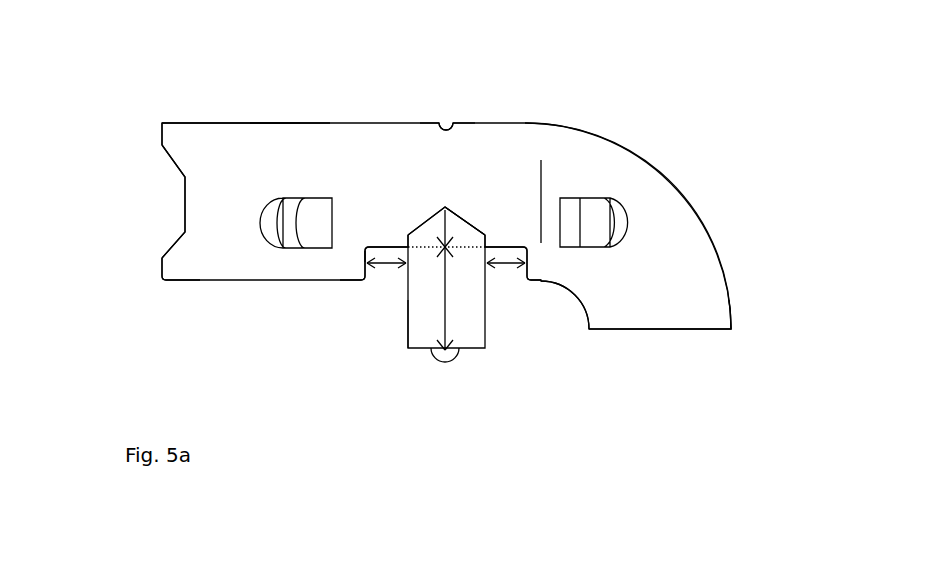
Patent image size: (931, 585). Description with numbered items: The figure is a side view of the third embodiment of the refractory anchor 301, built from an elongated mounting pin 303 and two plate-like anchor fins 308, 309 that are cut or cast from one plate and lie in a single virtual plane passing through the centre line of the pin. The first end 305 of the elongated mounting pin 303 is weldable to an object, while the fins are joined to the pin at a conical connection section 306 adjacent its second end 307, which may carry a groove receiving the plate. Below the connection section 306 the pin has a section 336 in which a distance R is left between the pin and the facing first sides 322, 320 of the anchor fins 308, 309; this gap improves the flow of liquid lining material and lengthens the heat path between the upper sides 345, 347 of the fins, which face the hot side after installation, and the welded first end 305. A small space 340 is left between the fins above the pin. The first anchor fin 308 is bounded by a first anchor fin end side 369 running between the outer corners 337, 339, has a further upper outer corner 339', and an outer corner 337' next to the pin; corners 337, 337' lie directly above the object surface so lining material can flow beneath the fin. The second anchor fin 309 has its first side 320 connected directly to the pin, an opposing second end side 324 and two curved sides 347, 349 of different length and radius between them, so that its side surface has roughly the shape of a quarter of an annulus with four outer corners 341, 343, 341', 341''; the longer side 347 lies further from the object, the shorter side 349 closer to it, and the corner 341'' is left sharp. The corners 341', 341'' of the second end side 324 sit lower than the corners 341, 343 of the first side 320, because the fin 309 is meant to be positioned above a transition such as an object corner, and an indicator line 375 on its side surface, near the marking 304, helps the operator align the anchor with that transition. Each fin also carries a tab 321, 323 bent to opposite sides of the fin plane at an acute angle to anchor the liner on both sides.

The refractory anchor 301 is at (145, 89).
The first anchor fin 308 is at (283, 150).
The outer corner 339 is at (142, 115).
The upper side 345 is at (240, 123).
The first anchor fin end side 369 is at (184, 207).
The outer corner 337 is at (154, 298).
The tab 321 is at (293, 250).
The outer corner 337' is at (367, 302).
The first side 322 is at (367, 263).
The first side 320 is at (528, 257).
The outer corner 341 is at (525, 316).
The first end 305 is at (457, 352).
The elongated mounting pin 303 is at (400, 333).
The section 336 is at (440, 310).
The second end 307 is at (429, 213).
The connection section 306 is at (448, 226).
The space 340 is at (447, 106).
The notch left edge 339' is at (413, 85).
The outer corner 343 is at (460, 113).
The indicator 375 is at (541, 165).
The second anchor fin 309 is at (617, 152).
The side 347 is at (717, 247).
The tab 323 is at (602, 213).
The quarter-disc region label 304 is at (640, 297).
The side 349 is at (576, 293).
The outer corner 341' is at (597, 366).
The second end side 324 is at (667, 331).
The outer corner 341'' is at (763, 343).